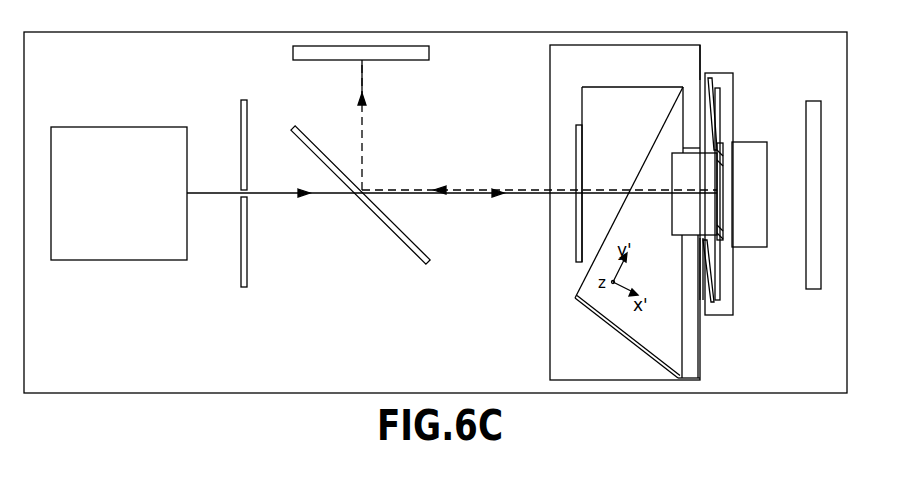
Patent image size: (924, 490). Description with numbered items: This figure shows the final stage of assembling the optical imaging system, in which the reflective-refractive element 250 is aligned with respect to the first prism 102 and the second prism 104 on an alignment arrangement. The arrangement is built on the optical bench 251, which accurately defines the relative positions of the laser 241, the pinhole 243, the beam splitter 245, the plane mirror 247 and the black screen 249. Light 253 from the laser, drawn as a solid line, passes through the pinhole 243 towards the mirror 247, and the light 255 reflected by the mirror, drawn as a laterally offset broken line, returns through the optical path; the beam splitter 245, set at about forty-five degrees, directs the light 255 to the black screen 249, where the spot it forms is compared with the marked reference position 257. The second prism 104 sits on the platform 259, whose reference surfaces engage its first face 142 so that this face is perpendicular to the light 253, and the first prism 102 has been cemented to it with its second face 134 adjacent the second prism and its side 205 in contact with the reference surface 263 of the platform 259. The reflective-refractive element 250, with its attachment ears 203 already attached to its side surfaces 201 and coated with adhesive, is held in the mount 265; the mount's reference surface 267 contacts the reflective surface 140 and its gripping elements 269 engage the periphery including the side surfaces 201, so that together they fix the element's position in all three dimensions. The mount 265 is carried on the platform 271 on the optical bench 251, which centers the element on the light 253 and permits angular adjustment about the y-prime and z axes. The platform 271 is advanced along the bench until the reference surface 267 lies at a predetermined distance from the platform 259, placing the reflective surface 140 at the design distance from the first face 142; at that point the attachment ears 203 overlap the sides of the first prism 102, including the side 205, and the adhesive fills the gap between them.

The first prism 102 is at (682, 362).
The second prism 104 is at (614, 98).
The second face 134 is at (576, 294).
The reflective surface 140 is at (718, 130).
The first face 142 is at (582, 103).
The side surfaces 201 is at (710, 242).
The attachment ear 203 is at (700, 172).
The side 205 is at (673, 338).
The laser 241 is at (118, 260).
The pinhole 243 is at (247, 197).
The beam splitter 245 is at (380, 222).
The plane mirror 247 is at (817, 291).
The black screen 249 is at (429, 52).
The reflective-refractive element 250 is at (717, 300).
The optical bench 251 is at (264, 362).
The light 253 is at (503, 198).
The light 255 is at (362, 125).
The position 257 is at (362, 62).
The platform 259 is at (704, 46).
The reference surface 263 is at (577, 324).
The mount 265 is at (738, 100).
The reference surface 267 is at (720, 288).
The gripping elements 269 is at (710, 85).
The platform 271 is at (767, 227).